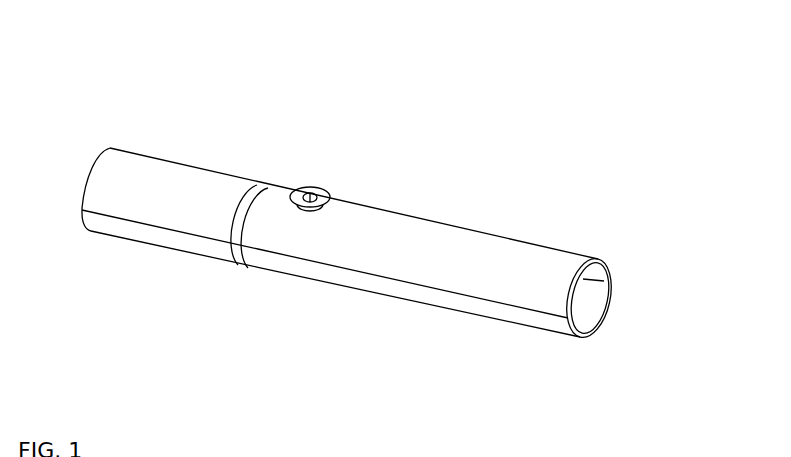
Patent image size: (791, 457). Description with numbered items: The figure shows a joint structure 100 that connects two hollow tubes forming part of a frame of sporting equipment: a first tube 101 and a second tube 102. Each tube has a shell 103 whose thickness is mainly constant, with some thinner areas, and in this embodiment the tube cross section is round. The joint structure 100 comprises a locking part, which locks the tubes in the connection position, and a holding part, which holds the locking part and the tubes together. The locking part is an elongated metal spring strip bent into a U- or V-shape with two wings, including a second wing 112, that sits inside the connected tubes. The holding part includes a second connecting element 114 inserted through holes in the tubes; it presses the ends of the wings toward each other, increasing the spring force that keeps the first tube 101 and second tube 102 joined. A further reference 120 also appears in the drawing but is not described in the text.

The joint structure 100 is at (82, 40).
The first tube 101 is at (116, 250).
The second tube 102 is at (397, 314).
The shell 103 is at (586, 335).
The second wing 112 is at (72, 257).
The second connecting element 114 is at (320, 176).
The ring / connector 120 is at (294, 447).